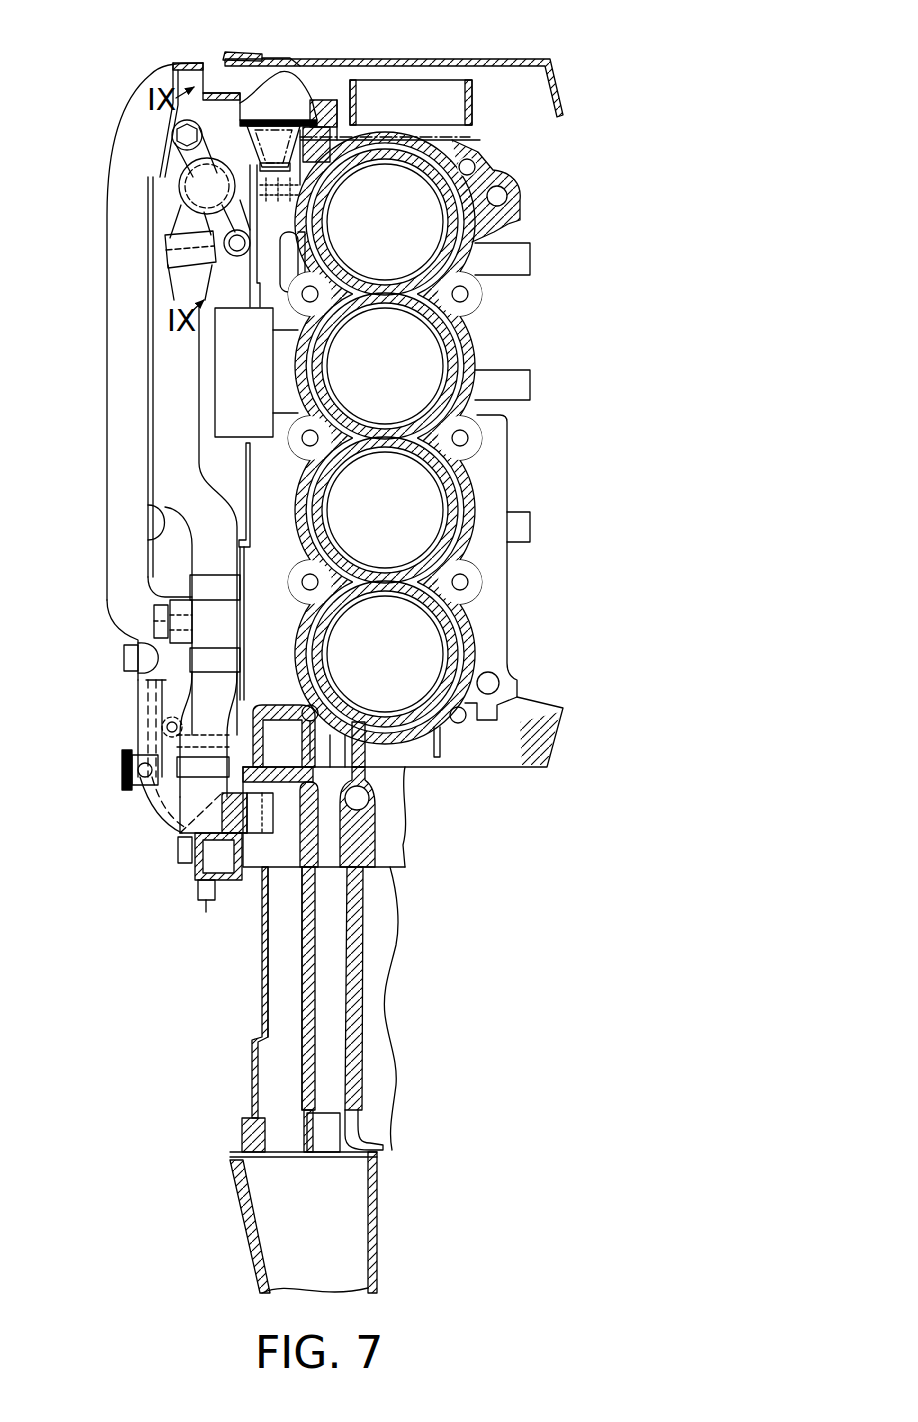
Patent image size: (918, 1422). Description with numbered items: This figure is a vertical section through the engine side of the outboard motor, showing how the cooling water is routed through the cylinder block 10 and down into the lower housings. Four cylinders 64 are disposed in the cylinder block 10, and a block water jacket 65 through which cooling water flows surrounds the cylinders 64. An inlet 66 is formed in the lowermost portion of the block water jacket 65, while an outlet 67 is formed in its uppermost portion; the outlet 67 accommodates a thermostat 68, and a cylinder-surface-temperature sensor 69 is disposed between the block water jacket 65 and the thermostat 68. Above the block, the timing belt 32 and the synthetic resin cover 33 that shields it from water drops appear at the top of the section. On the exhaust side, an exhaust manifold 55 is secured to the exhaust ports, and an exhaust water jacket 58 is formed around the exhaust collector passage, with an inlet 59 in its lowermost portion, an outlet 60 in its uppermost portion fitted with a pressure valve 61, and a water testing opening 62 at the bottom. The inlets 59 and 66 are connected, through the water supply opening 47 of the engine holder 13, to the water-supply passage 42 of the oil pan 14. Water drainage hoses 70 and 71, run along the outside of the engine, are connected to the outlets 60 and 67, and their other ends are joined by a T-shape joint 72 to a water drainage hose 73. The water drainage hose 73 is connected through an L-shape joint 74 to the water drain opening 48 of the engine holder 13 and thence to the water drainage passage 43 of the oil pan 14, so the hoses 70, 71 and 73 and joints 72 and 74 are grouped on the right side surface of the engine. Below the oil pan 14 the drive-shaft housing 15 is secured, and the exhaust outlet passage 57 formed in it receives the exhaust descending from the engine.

The cylinder block 10 is at (528, 195).
The engine holder 13 is at (383, 872).
The oil pan 14 is at (258, 1032).
The drive-shaft housing 15 is at (232, 1200).
The timing belt 32 is at (397, 80).
The cover 33 is at (492, 60).
The water-supply passage 42 is at (328, 988).
The water drainage passage 43 is at (304, 992).
The water supply opening 47 is at (332, 830).
The water drain opening 48 is at (310, 858).
The exhaust manifold 55 is at (133, 705).
The exhaust outlet passage 57 is at (318, 1245).
The exhaust water jacket 58 is at (135, 735).
The inlet 59 is at (185, 842).
The outlet 60 is at (165, 178).
The pressure valve 61 is at (175, 193).
The water testing opening 62 is at (210, 897).
The cylinders 64 is at (338, 220).
The block water jacket 65 is at (463, 345).
The inlet 66 is at (343, 745).
The outlet 67 is at (300, 118).
The thermostat 68 is at (285, 100).
The cylinder-surface-temperature sensor 69 is at (300, 250).
The water drainage hose 70 is at (160, 358).
The water drainage hose 71 is at (125, 413).
The T-shape joint 72 is at (168, 608).
The water drainage hose 73 is at (205, 692).
The L-shape joint 74 is at (172, 815).